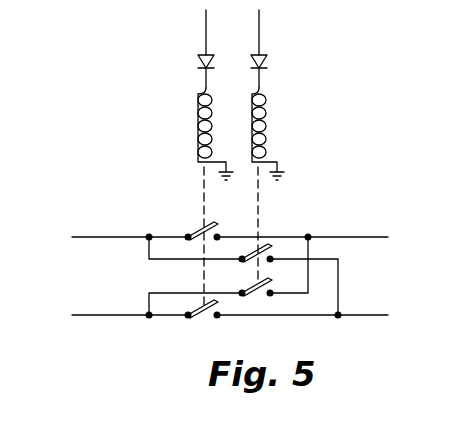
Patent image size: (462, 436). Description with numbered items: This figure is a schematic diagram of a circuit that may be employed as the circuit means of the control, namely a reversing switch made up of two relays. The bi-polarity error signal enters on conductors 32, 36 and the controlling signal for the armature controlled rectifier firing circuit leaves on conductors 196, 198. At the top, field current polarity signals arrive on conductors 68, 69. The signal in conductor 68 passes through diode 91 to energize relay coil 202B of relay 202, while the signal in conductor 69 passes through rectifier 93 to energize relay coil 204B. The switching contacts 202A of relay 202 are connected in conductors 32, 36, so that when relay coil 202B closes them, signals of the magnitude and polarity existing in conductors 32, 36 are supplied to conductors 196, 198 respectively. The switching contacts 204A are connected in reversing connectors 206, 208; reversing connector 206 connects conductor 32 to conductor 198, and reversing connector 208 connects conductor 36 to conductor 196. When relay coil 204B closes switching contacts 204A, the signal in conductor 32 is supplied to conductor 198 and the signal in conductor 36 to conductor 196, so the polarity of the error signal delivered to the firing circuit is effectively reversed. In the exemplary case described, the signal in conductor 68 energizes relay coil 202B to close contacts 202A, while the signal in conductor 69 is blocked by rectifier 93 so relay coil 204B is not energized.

The conductor 68 is at (206, 25).
The conductor 69 is at (259, 25).
The diode 91 is at (198, 62).
The rectifier 93 is at (267, 62).
The relay 202 is at (180, 158).
The relay coil 202B is at (197, 118).
The relay coil 204B is at (266, 115).
The switching contacts 202A is at (194, 230).
The switching contacts 204A is at (266, 246).
The conductor 32 is at (108, 218).
The conductor 36 is at (112, 300).
The conductor 196 is at (372, 224).
The conductor 198 is at (374, 303).
The reversing connector 206 is at (190, 250).
The reversing connector 208 is at (190, 283).